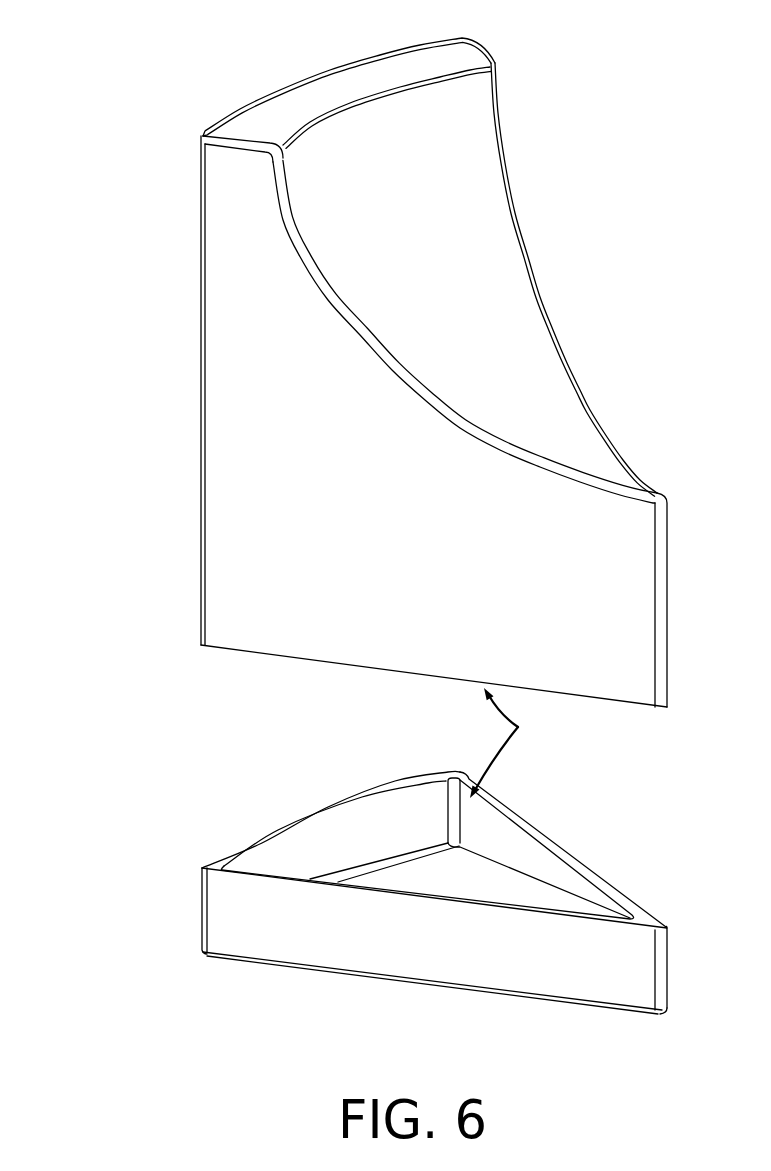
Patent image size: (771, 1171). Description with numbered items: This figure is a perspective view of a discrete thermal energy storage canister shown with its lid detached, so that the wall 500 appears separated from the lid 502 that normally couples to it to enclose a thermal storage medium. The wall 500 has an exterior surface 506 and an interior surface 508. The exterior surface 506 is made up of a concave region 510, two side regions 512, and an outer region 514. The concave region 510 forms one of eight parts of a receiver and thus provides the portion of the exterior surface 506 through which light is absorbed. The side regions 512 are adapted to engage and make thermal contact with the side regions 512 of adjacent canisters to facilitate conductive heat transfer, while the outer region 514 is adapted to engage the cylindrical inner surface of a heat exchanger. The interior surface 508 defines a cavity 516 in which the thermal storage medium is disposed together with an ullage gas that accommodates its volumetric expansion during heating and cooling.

The wall 500 is at (78, 99).
The lid 502 is at (198, 893).
The exterior surface 506 is at (663, 610).
The interior surface 508 is at (376, 804).
The concave region 510 is at (587, 430).
The side regions 512 is at (320, 630).
The outer region 514 is at (200, 393).
The cavity 516 is at (512, 743).